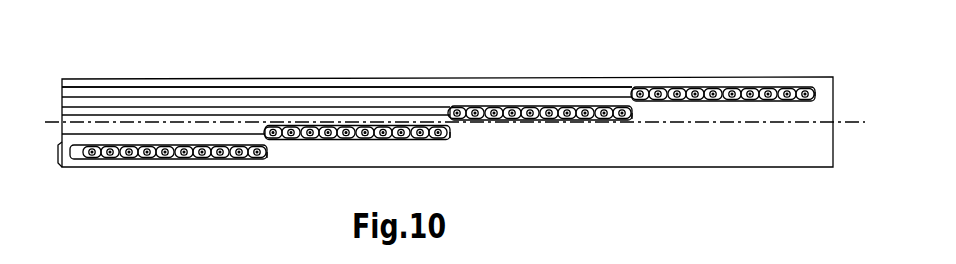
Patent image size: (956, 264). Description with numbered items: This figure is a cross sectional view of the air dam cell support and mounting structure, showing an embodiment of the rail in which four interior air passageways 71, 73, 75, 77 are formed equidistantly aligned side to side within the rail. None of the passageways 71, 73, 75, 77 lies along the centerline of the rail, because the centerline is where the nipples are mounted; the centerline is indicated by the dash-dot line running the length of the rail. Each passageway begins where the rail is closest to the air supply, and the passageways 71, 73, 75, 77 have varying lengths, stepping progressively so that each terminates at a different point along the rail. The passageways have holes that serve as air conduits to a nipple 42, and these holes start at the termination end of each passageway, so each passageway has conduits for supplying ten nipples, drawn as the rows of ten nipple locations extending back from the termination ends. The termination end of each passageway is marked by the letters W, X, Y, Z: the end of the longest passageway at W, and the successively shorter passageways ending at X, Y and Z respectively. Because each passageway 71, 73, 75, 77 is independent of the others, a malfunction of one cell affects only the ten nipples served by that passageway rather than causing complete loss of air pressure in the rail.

The interior passageway 71 is at (70, 152).
The interior passageway 73 is at (247, 127).
The interior passageway 75 is at (420, 109).
The interior passageway 77 is at (552, 90).
The nipple 42 is at (640, 93).
The chain end position W is at (816, 98).
The chain end position X is at (633, 118).
The chain end position Y is at (452, 138).
The chain end position Z is at (269, 156).